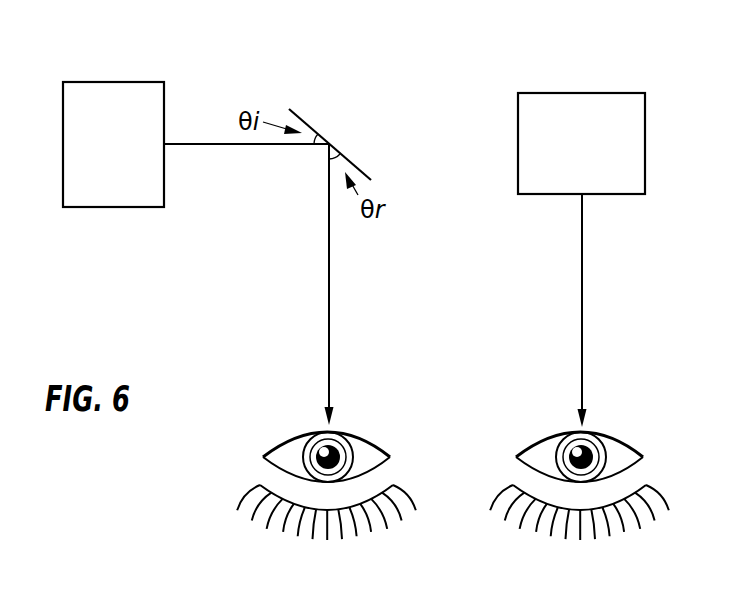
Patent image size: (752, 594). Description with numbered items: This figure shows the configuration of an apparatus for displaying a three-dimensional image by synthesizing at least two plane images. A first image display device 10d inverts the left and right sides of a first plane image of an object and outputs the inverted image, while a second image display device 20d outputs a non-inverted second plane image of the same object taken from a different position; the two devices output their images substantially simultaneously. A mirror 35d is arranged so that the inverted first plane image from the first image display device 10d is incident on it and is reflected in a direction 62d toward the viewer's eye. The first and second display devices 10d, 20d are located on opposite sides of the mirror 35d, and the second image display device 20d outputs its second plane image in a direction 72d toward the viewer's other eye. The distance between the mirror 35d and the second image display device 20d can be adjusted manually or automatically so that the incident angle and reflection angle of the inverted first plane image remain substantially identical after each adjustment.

The first image display device 10d is at (93, 82).
The second image display device 20d is at (617, 93).
The mirror 35d is at (306, 122).
The direction 62d is at (328, 348).
The direction 72d is at (582, 293).